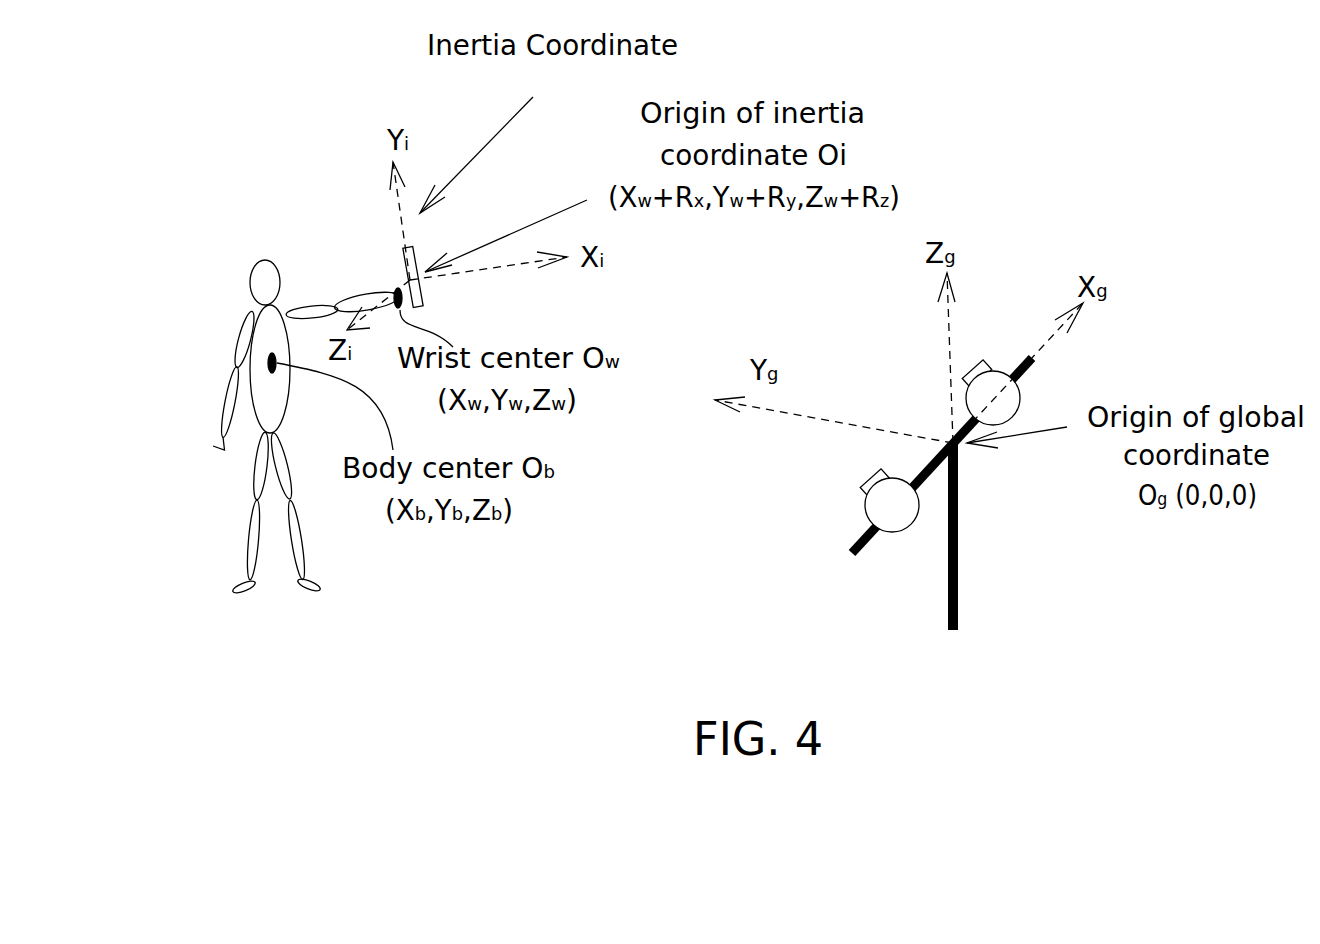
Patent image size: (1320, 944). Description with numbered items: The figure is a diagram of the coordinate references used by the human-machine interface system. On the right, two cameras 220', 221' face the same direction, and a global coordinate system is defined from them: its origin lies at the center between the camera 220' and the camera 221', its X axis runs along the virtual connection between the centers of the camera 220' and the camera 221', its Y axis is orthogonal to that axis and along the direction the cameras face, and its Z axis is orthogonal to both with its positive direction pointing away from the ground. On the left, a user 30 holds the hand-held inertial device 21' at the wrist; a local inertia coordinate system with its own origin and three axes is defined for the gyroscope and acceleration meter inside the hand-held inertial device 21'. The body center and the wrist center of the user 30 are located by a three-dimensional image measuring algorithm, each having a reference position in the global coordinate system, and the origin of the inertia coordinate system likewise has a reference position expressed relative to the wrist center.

The user 30 is at (230, 337).
The hand-held inertial device 21' is at (360, 249).
The camera 220' is at (1084, 376).
The camera 221' is at (895, 555).